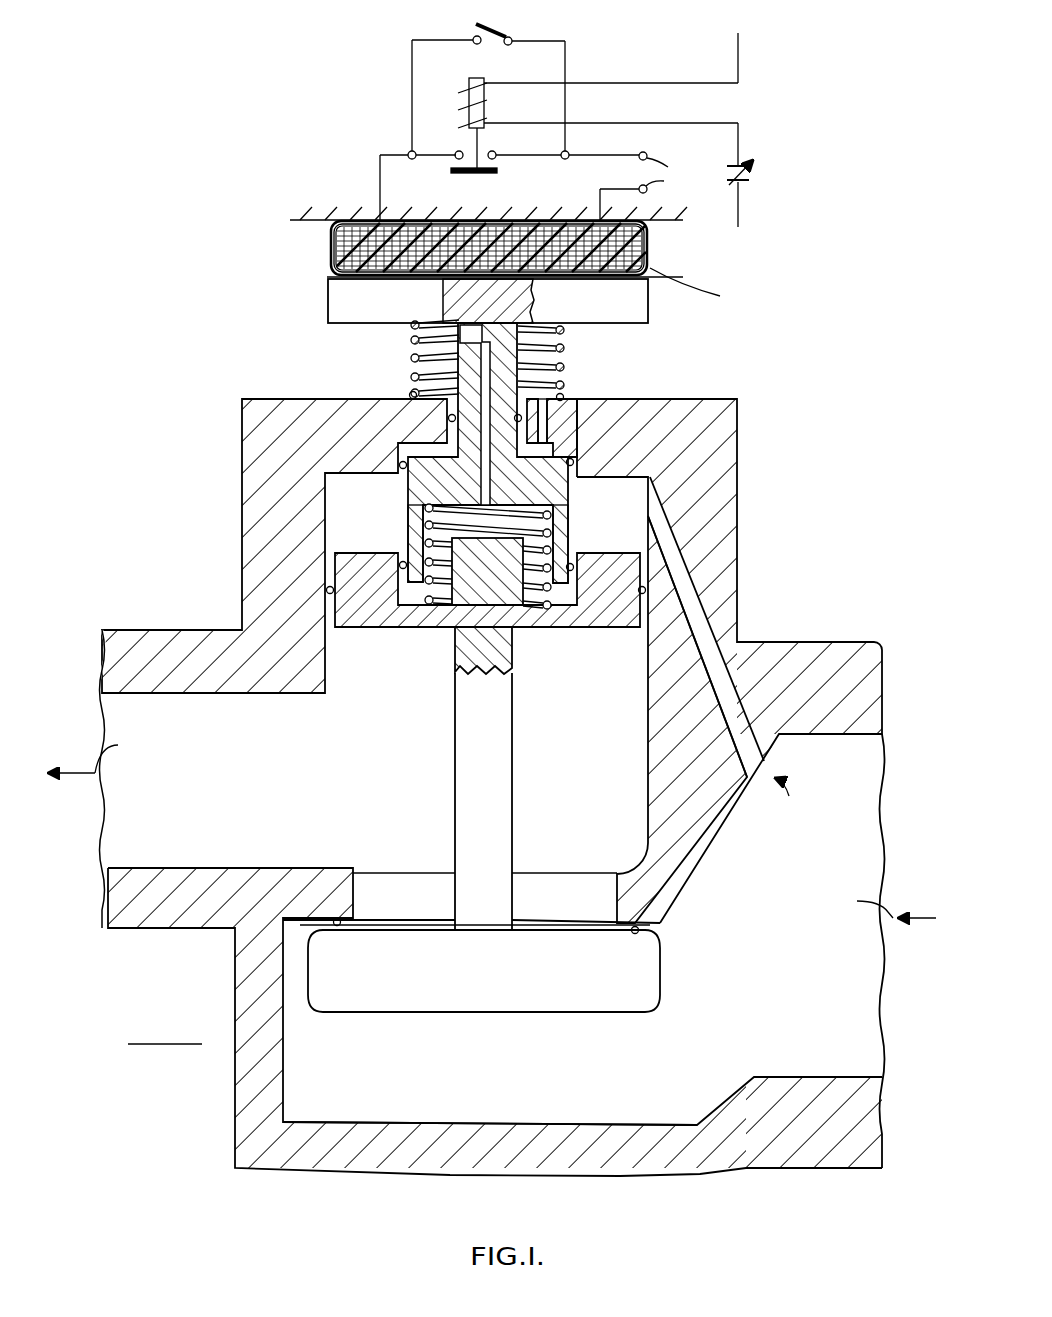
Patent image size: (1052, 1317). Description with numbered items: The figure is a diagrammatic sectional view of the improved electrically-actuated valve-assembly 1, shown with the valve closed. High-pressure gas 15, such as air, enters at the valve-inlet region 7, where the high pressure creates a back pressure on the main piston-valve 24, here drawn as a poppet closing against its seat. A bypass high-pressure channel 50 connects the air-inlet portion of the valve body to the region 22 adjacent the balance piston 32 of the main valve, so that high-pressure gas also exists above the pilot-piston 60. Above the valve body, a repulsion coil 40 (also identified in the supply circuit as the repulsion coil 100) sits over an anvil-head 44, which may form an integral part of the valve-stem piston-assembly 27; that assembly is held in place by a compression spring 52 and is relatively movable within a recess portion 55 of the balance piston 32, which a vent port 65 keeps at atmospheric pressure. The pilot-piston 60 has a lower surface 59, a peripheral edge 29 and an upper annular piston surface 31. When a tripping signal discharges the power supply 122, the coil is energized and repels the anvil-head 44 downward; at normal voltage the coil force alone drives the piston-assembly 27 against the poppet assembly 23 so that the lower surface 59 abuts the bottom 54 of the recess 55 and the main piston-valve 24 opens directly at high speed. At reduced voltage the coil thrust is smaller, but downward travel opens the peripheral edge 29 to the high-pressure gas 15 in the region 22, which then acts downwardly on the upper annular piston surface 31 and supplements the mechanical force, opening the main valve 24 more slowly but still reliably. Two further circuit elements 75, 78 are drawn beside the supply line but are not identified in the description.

The electrically-actuated valve-assembly 1 is at (180, 492).
The valve-inlet region 7 is at (632, 1079).
The high-pressure gas 15 is at (787, 1049).
The region 22 is at (627, 505).
The poppet assembly 23 is at (513, 815).
The main piston-valve 24 is at (398, 1010).
The valve-stem piston-assembly 27 is at (465, 370).
The peripheral edge 29 is at (553, 443).
The upper annular piston surface 31 is at (592, 399).
The balance piston 32 is at (613, 557).
The repulsion coil 40 is at (648, 250).
The anvil-head 44 is at (640, 305).
The bypass high-pressure channel 50 is at (698, 613).
The compression spring 52 is at (567, 348).
The bottom of the recess 54 is at (575, 598).
The recess portion 55 is at (400, 587).
The lower surface 59 is at (415, 583).
The pilot-piston 60 is at (418, 492).
The vent port 65 is at (470, 342).
The capacitor 75 is at (750, 168).
The capacitor plate 78 is at (750, 181).
The repulsion coil 100 is at (331, 248).
The power supply 122 is at (621, 178).